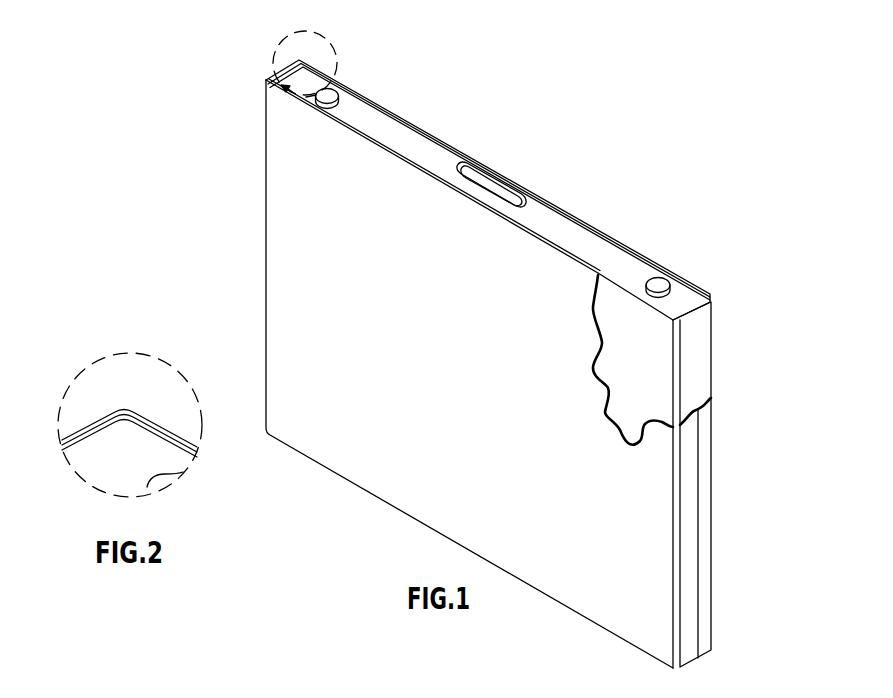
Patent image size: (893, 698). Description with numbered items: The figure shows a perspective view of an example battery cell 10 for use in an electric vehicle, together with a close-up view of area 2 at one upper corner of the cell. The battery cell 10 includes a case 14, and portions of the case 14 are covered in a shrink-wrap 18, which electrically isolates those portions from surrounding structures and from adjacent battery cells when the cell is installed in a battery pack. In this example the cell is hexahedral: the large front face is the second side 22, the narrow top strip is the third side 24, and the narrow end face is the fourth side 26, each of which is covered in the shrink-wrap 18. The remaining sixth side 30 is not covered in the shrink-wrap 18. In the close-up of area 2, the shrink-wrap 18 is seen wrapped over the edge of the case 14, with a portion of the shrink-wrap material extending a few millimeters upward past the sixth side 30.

In FIG. 1, the area 2 is at (337, 56).
In FIG. 1, the battery cell 10 is at (545, 364).
In FIG. 1, the case 14 is at (658, 360).
In FIG. 2, the case 14 is at (113, 455).
In FIG. 1, the shrink-wrap 18 is at (688, 572).
In FIG. 2, the shrink-wrap 18 is at (131, 428).
In FIG. 1, the second side 22 is at (423, 481).
In FIG. 1, the third side 24 is at (672, 240).
In FIG. 1, the fourth side 26 is at (737, 484).
In FIG. 1, the sixth side 30 is at (535, 158).
In FIG. 2, the sixth side 30 is at (141, 460).